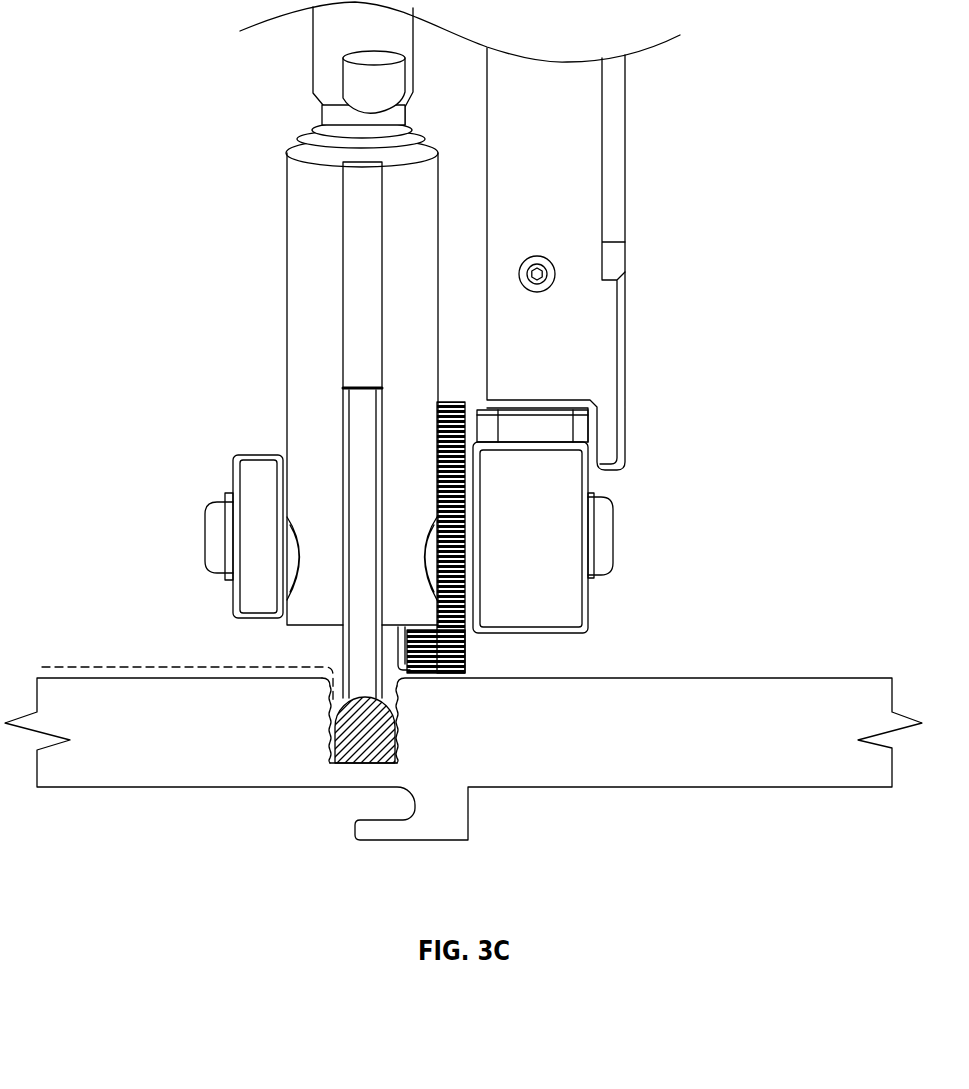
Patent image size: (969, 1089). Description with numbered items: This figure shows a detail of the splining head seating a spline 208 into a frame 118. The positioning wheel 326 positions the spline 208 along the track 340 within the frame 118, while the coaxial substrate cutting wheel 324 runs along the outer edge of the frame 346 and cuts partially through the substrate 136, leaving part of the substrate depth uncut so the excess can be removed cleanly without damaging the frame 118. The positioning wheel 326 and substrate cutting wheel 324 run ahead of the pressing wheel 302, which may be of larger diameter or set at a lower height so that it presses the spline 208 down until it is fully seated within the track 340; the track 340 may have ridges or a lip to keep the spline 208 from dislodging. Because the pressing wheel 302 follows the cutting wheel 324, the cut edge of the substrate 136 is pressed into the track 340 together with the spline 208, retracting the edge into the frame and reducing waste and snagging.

The frame 118 is at (156, 746).
The substrate 136 is at (116, 667).
The spline 208 is at (382, 733).
The pressing wheel 302 is at (345, 638).
The substrate cutting wheel 324 is at (466, 657).
The positioning wheel 326 is at (390, 668).
The track 340 is at (328, 762).
The frame 346 is at (477, 679).